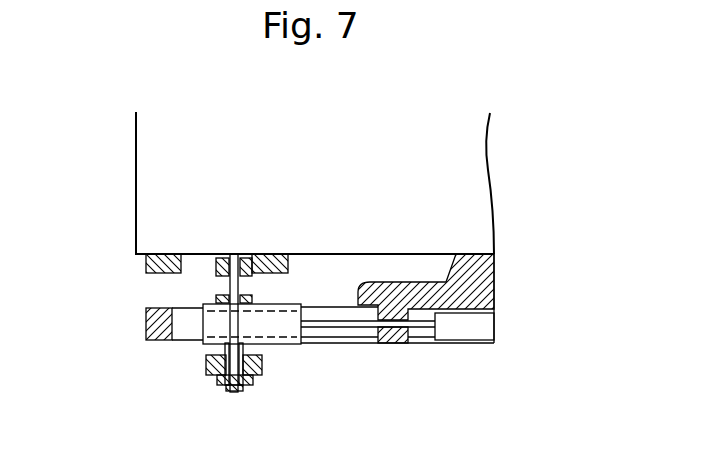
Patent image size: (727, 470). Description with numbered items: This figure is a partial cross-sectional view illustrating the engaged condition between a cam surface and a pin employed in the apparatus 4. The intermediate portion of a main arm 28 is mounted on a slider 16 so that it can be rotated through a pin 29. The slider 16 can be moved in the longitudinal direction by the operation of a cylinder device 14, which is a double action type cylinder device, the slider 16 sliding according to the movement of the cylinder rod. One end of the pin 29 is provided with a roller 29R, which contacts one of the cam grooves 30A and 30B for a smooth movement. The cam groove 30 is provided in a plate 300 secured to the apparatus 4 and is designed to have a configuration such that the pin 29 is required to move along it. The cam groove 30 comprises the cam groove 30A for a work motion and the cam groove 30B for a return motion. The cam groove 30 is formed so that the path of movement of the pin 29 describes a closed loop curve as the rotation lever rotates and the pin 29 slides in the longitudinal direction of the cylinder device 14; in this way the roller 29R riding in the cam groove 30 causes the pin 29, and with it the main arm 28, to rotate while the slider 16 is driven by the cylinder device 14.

The apparatus 4 is at (133, 179).
The cam groove 30 is at (223, 215).
The cam groove for a work motion 30A is at (191, 253).
The cam groove for a return motion 30B is at (240, 253).
The plate 300 is at (282, 252).
The roller 29R is at (215, 269).
The pin 29 is at (234, 394).
The main arm 28 is at (262, 368).
The slider 16 is at (295, 344).
The cylinder device 14 is at (464, 333).